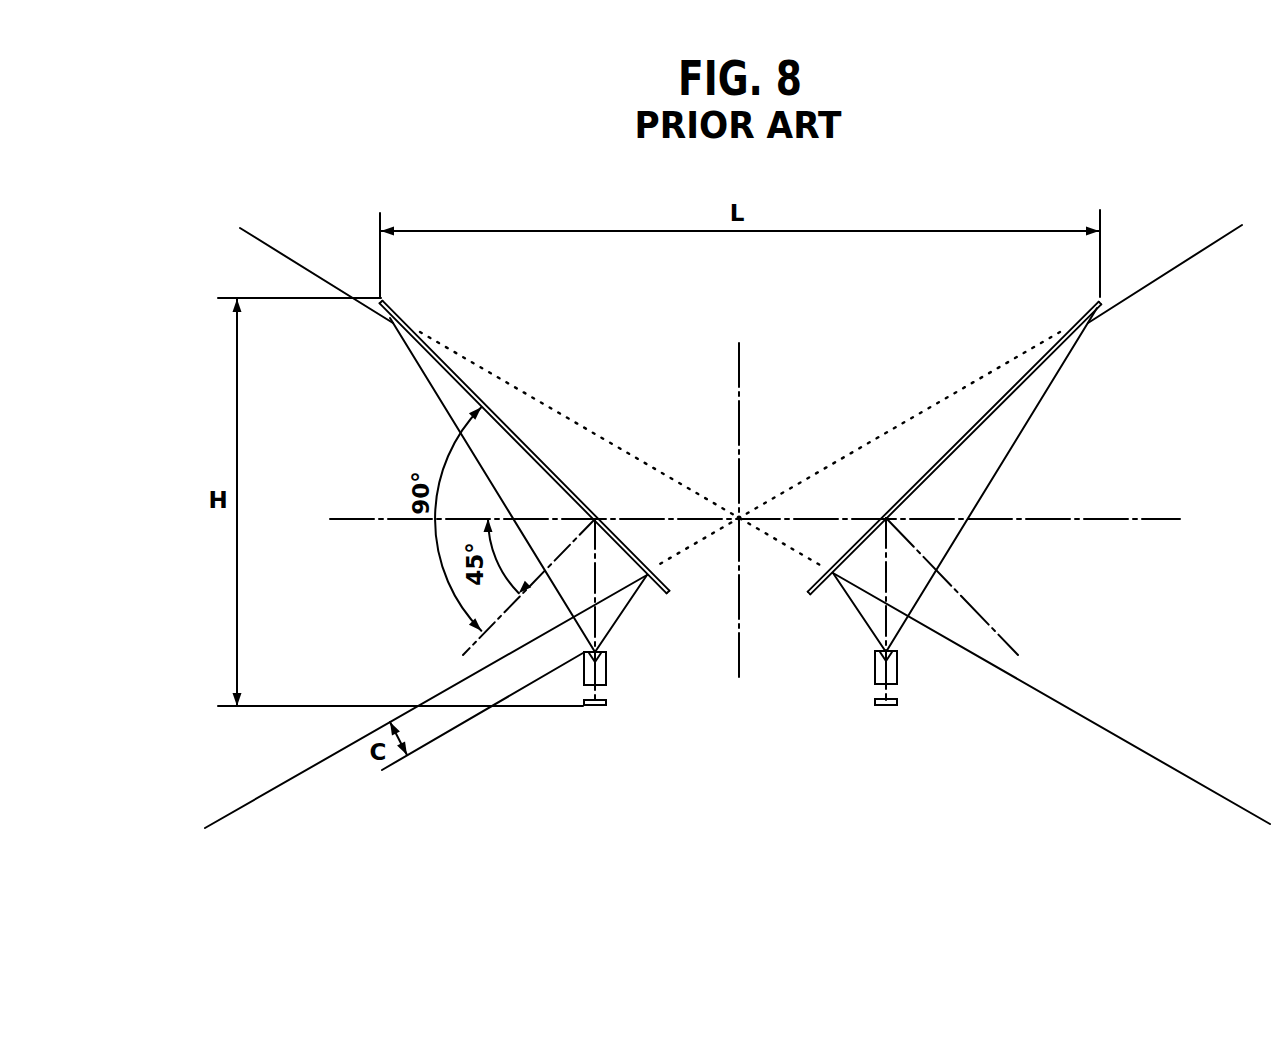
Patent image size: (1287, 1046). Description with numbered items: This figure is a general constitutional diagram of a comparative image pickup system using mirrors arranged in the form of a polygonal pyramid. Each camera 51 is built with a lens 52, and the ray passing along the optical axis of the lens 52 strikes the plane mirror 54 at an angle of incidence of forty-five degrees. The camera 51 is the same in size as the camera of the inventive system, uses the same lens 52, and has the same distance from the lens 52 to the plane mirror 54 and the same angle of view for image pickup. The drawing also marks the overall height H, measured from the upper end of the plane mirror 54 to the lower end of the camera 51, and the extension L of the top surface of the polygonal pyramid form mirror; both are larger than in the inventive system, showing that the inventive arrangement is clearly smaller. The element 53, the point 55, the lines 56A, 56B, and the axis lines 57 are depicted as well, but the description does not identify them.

The camera 51 is at (740, 677).
The lens 52 is at (606, 667).
The light receiving element 53 is at (740, 709).
The plane mirror 54 is at (463, 380).
The intersection point of optical axes 55 is at (745, 512).
The upper reflected light beam 56A is at (327, 277).
The lower reflected light beam 56B is at (277, 785).
The optical axis 57 is at (887, 579).